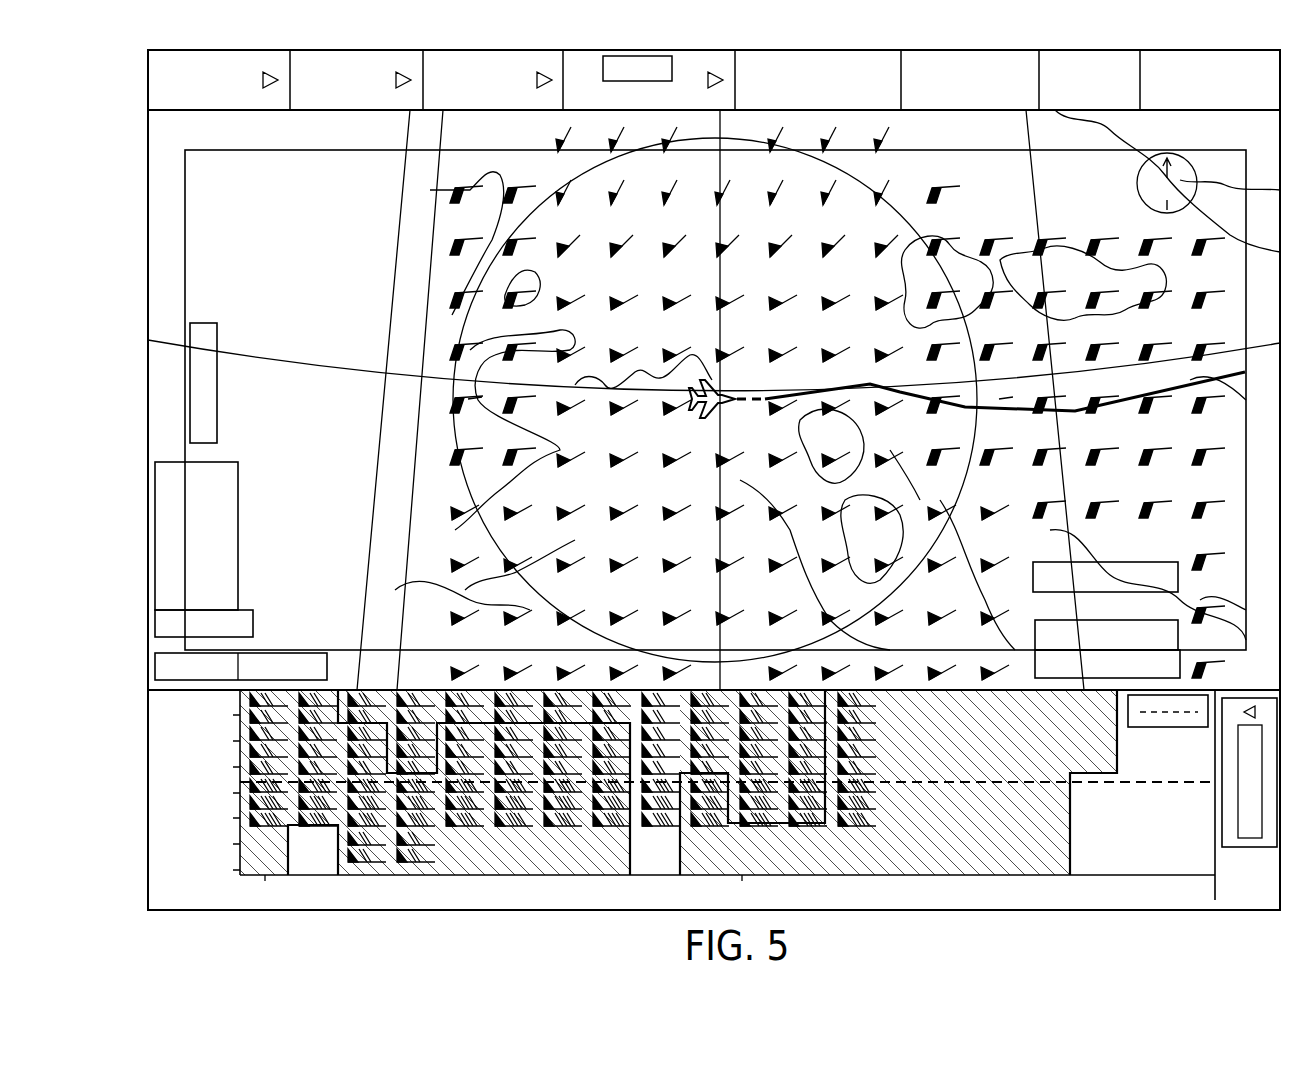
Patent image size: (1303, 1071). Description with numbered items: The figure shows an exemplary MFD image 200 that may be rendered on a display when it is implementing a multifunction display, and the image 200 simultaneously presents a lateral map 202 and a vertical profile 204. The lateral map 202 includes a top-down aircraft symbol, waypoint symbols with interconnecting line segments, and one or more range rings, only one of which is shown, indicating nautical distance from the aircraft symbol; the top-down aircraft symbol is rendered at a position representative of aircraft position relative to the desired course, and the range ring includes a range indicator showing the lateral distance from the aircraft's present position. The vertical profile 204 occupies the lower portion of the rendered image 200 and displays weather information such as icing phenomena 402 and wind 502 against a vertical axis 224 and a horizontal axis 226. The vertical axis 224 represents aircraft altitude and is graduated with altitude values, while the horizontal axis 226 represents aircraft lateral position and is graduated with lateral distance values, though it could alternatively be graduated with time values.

The MFD image 200 is at (140, 92).
The lateral map 202 is at (147, 237).
The vertical profile 204 is at (667, 822).
The vertical axis 224 is at (148, 843).
The horizontal axis 226 is at (376, 912).
The icing phenomena 402 is at (545, 862).
The wind 502 is at (435, 832).